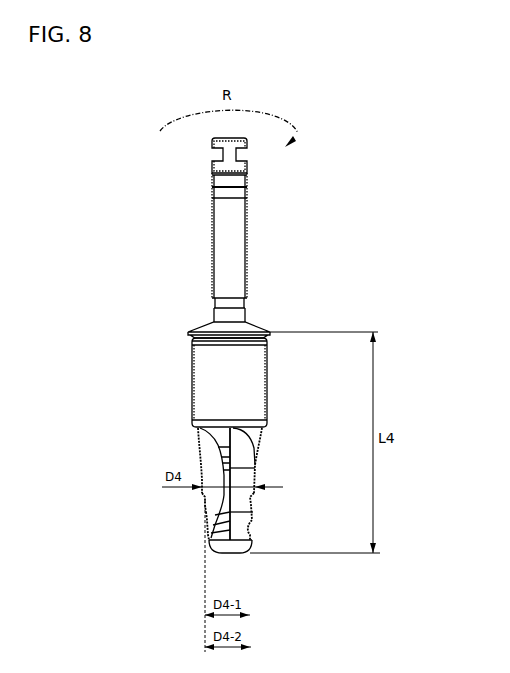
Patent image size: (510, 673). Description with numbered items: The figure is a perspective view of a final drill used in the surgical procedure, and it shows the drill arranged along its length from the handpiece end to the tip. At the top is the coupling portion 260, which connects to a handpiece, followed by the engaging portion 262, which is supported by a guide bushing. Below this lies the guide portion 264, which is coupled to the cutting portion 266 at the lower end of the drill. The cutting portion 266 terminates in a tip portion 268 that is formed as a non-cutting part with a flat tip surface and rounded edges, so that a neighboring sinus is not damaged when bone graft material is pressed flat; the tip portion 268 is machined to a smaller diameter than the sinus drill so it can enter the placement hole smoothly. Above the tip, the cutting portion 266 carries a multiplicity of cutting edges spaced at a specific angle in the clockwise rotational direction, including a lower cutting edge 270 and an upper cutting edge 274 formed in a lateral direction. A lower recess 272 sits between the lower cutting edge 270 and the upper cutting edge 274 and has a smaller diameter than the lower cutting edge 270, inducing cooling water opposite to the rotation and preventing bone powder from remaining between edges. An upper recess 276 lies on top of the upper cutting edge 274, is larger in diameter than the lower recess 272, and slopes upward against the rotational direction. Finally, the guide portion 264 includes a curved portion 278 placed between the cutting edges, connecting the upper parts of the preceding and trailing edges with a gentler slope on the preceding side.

The coupling portion 260 is at (238, 227).
The engaging portion 262 is at (267, 328).
The guide portion 264 is at (260, 378).
The cutting portion 266 is at (197, 521).
The tip portion 268 is at (227, 557).
The lower cutting edge 270 is at (197, 517).
The lower recess 272 is at (255, 508).
The upper cutting edge 274 is at (197, 497).
The upper recess 276 is at (255, 469).
The curved portion 278 is at (200, 448).